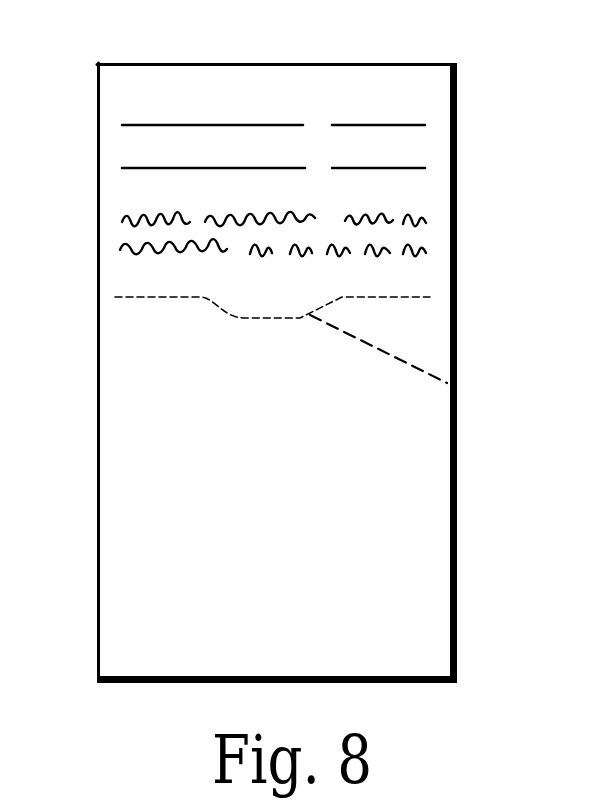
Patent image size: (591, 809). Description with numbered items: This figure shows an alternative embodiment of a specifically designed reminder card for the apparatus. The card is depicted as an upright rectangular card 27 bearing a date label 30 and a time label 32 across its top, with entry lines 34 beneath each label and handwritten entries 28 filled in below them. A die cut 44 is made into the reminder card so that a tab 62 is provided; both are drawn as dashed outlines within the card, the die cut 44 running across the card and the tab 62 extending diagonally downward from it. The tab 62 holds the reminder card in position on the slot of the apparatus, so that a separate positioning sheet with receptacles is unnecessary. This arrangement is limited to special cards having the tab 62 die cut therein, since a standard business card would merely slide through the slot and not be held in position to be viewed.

The record card 27 is at (412, 612).
The handwritten entries 28 is at (433, 220).
The date field label 30 is at (177, 75).
The time field label 32 is at (370, 75).
The entry lines 34 is at (398, 145).
The die cut 44 is at (400, 295).
The tab 62 is at (447, 383).